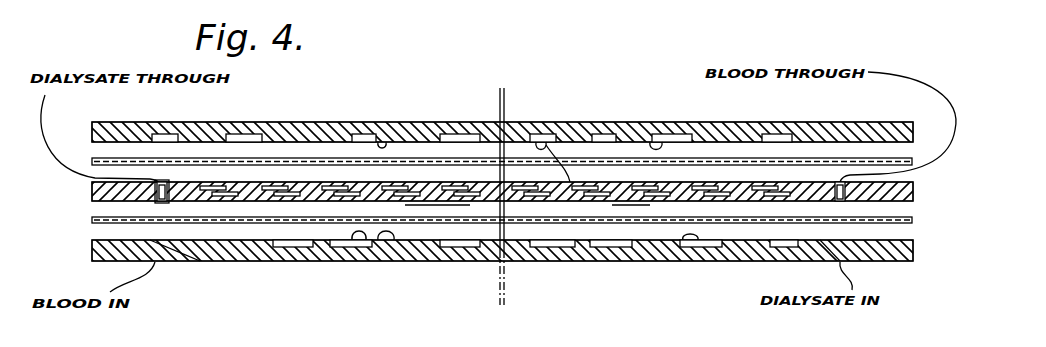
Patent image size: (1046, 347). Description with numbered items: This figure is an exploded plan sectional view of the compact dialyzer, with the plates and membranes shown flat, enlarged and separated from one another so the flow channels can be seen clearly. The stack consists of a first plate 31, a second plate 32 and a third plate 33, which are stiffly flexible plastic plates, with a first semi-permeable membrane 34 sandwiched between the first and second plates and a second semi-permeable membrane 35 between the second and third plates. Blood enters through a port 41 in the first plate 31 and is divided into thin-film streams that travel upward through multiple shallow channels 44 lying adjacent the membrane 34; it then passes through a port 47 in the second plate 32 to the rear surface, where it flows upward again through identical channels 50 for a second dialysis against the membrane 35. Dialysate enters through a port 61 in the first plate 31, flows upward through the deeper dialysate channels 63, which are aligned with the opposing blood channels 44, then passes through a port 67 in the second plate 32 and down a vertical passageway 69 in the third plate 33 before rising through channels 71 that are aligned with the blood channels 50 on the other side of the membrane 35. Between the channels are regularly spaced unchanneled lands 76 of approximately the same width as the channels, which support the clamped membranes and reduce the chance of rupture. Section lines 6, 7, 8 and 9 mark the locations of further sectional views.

The first rectangular plate 31 is at (570, 262).
The second rectangular plate 32 is at (630, 201).
The third rectangular plate 33 is at (595, 122).
The first semi-permeable membrane 34 is at (312, 223).
The second semi-permeable membrane 35 is at (314, 158).
The port 41 is at (166, 262).
The channels 44 is at (456, 201).
The port 47 is at (840, 182).
The channels 50 is at (412, 182).
The port 61 is at (830, 262).
The dialysate channels 63 is at (386, 240).
The port 67 is at (167, 192).
The vertical passageway 69 is at (163, 182).
The channels 71 is at (379, 142).
The lands 76 is at (546, 142).
The section line 6- 6 is at (100, 235).
The section line 7- 7 is at (108, 207).
The section line 8- 8 is at (95, 172).
The section line 9- 9 is at (100, 148).